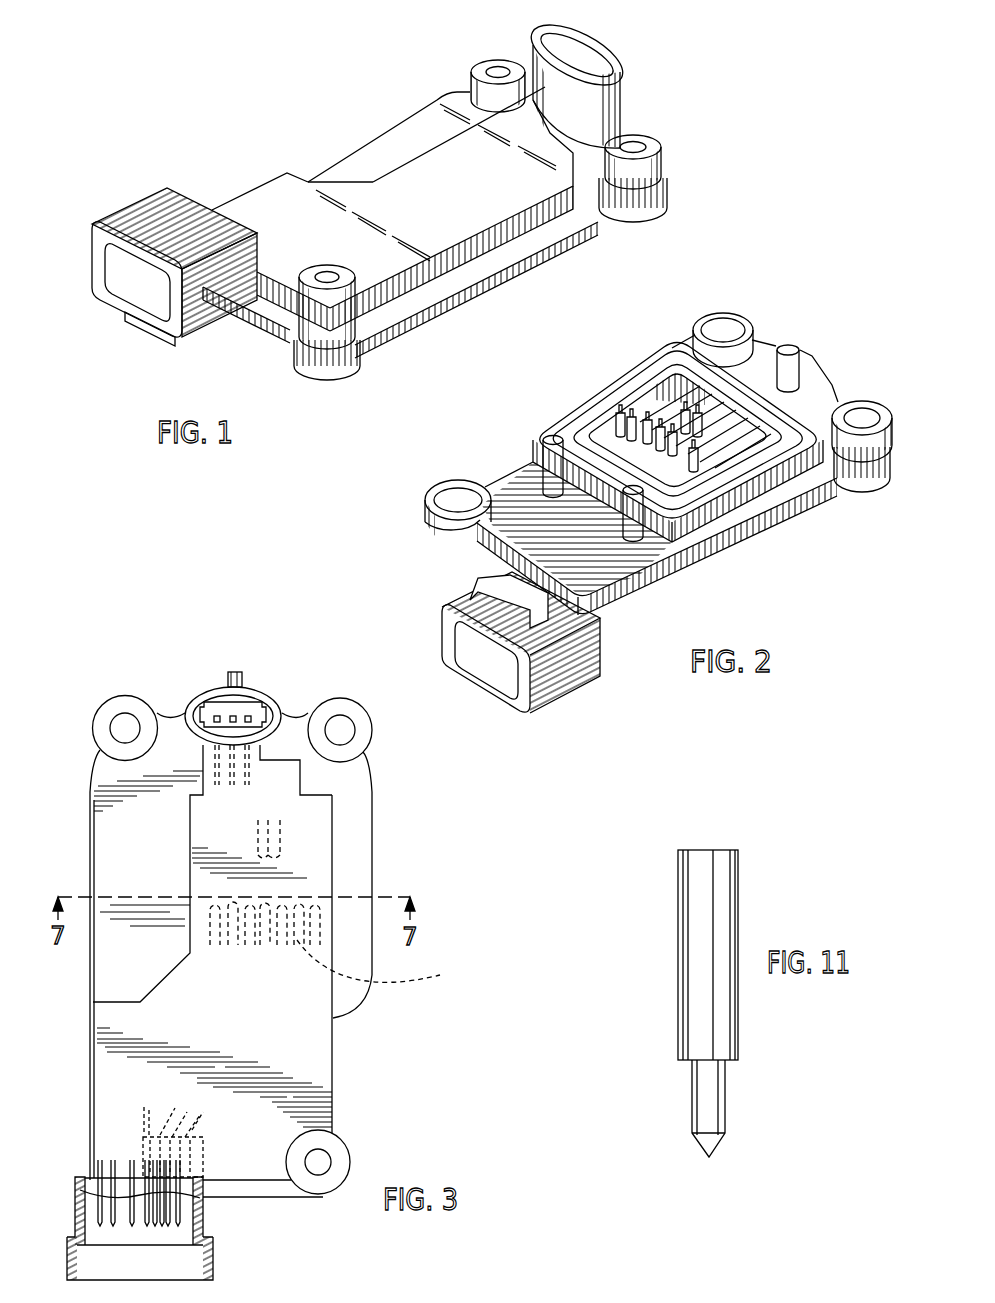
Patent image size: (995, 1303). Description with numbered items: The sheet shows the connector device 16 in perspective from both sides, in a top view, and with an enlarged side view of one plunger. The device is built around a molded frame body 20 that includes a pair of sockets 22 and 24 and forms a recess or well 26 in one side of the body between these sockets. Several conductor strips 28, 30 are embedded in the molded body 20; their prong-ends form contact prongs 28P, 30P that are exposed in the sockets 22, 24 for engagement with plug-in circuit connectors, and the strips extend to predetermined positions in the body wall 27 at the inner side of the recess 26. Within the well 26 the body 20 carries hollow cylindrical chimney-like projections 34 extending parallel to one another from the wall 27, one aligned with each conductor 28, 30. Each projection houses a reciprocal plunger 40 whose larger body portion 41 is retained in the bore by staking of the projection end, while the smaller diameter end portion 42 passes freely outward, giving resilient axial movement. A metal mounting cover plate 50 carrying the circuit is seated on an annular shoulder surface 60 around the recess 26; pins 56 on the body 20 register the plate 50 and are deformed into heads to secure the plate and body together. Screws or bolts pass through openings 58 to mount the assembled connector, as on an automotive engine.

In FIG. 1, the connector device 16 is at (390, 106).
In FIG. 1, the molded frame body 20 is at (291, 166).
In FIG. 3, the molded frame body 20 is at (88, 1060).
In FIG. 1, the socket 22 is at (615, 90).
In FIG. 3, the socket 22 is at (278, 700).
In FIG. 1, the socket 24 is at (98, 300).
In FIG. 2, the socket 24 is at (532, 712).
In FIG. 3, the socket 24 is at (213, 1260).
In FIG. 2, the recess or well 26 is at (740, 470).
In FIG. 2, the body wall 27 is at (695, 492).
In FIG. 3, the conductor strip 28 is at (337, 945).
In FIG. 3, the contact prong 28P is at (100, 1226).
In FIG. 3, the conductor strip 30 is at (283, 837).
In FIG. 3, the contact prong 30P is at (233, 714).
In FIG. 2, the hollow cylindrical chimney-like projection 34 is at (622, 408).
In FIG. 11, the plunger 40 is at (668, 969).
In FIG. 11, the larger body portion 41 is at (680, 953).
In FIG. 11, the smaller diameter end portion 42 is at (692, 1112).
In FIG. 1, the metal mounting cover plate 50 is at (420, 325).
In FIG. 2, the pin 56 is at (791, 348).
In FIG. 1, the opening 58 is at (497, 52).
In FIG. 2, the opening 58 is at (440, 560).
In FIG. 3, the opening 58 is at (138, 708).
In FIG. 2, the annular shoulder surface 60 is at (661, 378).